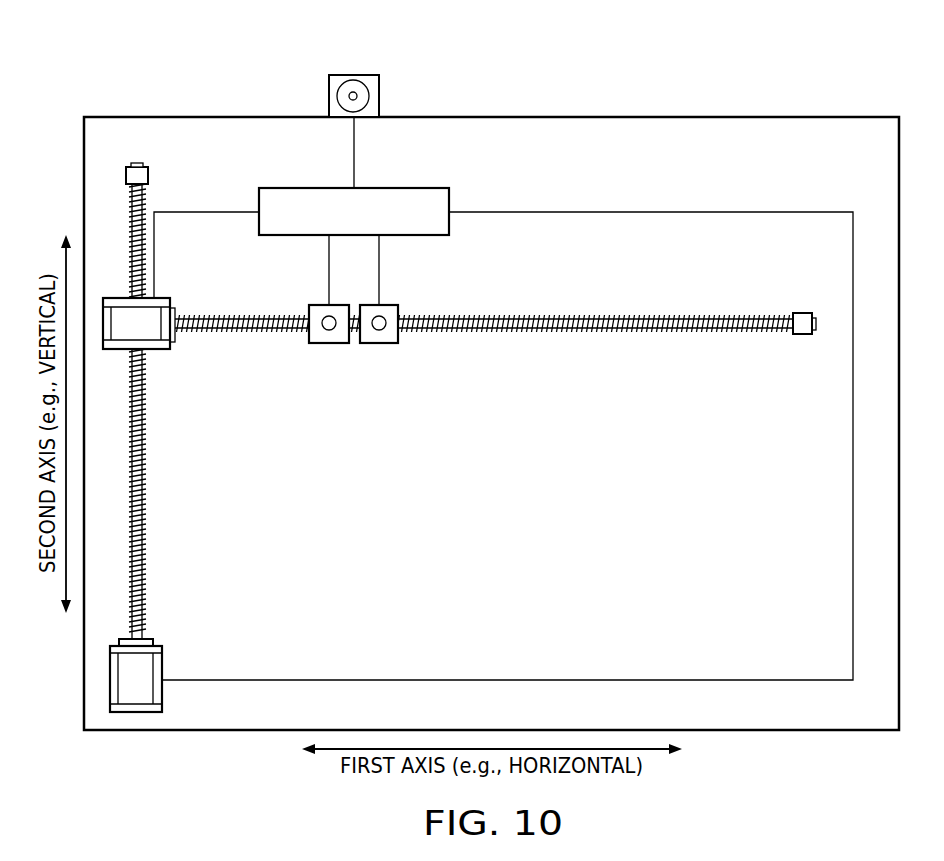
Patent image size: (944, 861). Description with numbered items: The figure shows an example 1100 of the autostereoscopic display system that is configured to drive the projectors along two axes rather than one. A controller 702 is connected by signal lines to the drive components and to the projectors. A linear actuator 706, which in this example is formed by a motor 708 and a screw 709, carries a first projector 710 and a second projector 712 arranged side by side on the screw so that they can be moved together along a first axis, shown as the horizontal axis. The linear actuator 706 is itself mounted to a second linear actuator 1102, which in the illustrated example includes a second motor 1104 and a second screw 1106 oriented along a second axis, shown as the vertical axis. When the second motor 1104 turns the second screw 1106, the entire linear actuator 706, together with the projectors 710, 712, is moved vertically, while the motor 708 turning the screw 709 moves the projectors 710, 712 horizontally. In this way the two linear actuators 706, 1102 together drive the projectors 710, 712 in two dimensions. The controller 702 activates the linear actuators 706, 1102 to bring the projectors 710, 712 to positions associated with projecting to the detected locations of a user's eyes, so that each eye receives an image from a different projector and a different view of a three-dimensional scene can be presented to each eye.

The example of the system configured to drive projectors along two axes 1100 is at (80, 73).
The controller 702 is at (295, 187).
The linear actuator 706 is at (683, 285).
The motor 708 is at (172, 345).
The screw 709 is at (802, 313).
The first projector 710 is at (308, 310).
The second projector 712 is at (387, 307).
The second linear actuator 1102 is at (212, 612).
The second motor 1104 is at (163, 662).
The second screw 1106 is at (143, 510).